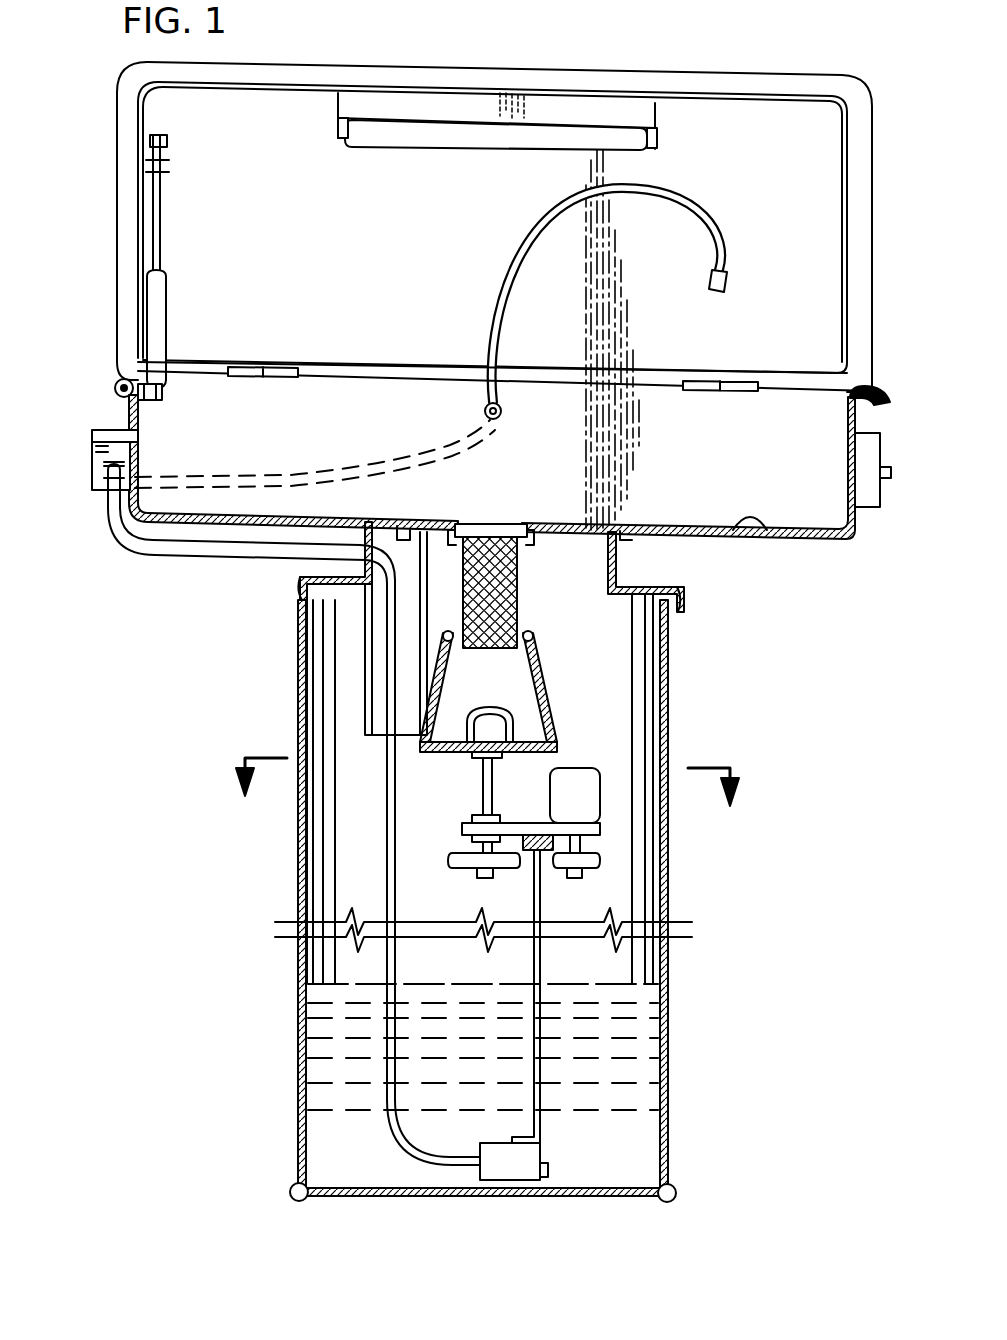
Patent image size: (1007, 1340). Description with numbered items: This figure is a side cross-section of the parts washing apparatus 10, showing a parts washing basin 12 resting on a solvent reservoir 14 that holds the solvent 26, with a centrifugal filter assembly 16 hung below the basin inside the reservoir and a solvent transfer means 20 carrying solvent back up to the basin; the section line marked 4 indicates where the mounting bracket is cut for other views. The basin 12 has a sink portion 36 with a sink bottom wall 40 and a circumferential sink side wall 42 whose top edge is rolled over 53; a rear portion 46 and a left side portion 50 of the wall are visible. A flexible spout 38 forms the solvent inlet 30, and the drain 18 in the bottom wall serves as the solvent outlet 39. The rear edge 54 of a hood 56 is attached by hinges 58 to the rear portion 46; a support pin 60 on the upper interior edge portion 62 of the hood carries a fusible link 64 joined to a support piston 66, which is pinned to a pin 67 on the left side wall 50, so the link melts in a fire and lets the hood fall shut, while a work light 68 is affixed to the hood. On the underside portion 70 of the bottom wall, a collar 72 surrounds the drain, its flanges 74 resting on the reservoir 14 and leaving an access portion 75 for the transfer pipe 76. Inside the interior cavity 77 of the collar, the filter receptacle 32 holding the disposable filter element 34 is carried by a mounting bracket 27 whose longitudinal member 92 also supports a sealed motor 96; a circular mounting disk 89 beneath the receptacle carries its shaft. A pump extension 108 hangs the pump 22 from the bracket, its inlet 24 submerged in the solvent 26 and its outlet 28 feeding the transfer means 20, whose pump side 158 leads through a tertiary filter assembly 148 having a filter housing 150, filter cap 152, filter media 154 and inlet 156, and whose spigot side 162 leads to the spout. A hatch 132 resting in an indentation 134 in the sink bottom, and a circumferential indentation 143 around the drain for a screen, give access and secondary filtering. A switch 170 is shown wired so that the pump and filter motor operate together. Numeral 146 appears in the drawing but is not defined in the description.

The parts washing apparatus 10 is at (156, 656).
The parts washing basin 12 is at (537, 699).
The solvent reservoir 14 is at (492, 901).
The centrifugal filter assembly 16 is at (486, 947).
The drain 18 is at (604, 532).
The solvent transfer means 20 is at (250, 805).
The pump 22 is at (504, 1198).
The inlet 24 is at (549, 1180).
The solvent 26 is at (340, 1098).
The mounting bracket 27 is at (458, 829).
The outlet 28 is at (479, 1168).
The solvent inlet 30 is at (727, 287).
The filter receptacle 32 is at (488, 691).
The filter element 34 is at (540, 643).
The sink portion 36 is at (762, 466).
The flexible spout 38 is at (643, 303).
The solvent outlet 39 is at (521, 527).
The sink bottom wall 40 is at (440, 519).
The sink side wall 42 is at (119, 395).
The rear portion 46 is at (405, 372).
The left side portion 50 is at (437, 508).
The rolled over edge 53 is at (123, 379).
The rear edge 54 is at (400, 360).
The hood 56 is at (467, 214).
The hinges 58 is at (265, 365).
The support pin 60 is at (142, 118).
The upper interior edge portion 62 is at (132, 70).
The fusible link 64 is at (169, 165).
The support piston 66 is at (163, 236).
The pin 67 is at (163, 398).
The work light 68 is at (576, 128).
The underside portion 70 is at (258, 530).
The collar 72 is at (618, 546).
The flanges 74 is at (320, 562).
The access portion 75 is at (373, 522).
The transfer pipe 76 is at (128, 541).
The interior cavity 77 is at (424, 656).
The circular mounting disk 89 is at (440, 749).
The longitudinal member 92 is at (552, 846).
The sealed motor 96 is at (600, 800).
The pump extension 108 is at (542, 972).
The hatch 132 is at (398, 530).
The indentation 134 is at (623, 526).
The circumferential indentation 143 is at (503, 516).
The mesh cylinder 146 is at (522, 588).
The tertiary filter assembly 148 is at (104, 472).
The filter housing 150 is at (110, 490).
The filter cap 152 is at (96, 430).
The filter media 154 is at (97, 446).
The inlet 156 is at (115, 508).
The pump side 158 is at (142, 478).
The spigot side 162 is at (290, 472).
The switch 170 is at (885, 482).
The section line 4 is at (487, 796).